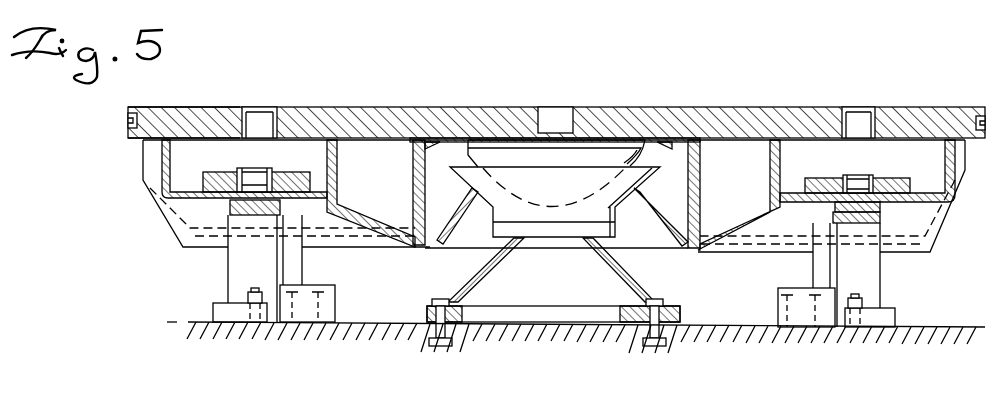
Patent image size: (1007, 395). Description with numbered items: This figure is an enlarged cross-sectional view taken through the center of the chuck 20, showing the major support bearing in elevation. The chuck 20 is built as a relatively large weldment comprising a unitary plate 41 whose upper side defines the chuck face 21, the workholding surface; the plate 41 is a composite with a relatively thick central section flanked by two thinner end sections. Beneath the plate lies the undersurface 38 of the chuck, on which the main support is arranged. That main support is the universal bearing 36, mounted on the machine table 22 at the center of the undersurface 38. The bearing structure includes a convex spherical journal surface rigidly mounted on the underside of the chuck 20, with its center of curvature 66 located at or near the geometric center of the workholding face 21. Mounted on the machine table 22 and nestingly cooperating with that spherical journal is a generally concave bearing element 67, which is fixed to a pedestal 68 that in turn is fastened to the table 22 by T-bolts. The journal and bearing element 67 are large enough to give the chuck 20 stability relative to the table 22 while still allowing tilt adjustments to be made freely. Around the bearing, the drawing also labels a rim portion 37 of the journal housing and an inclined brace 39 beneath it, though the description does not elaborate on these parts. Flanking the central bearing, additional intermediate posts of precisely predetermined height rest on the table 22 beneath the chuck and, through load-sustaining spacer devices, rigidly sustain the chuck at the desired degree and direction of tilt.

The chuck 20 is at (386, 94).
The chuck face 21 is at (750, 107).
The plate 41 is at (216, 107).
The center of curvature 66 is at (556, 120).
The undersurface 38 is at (670, 141).
The bowl rim 37 is at (477, 152).
The universal bearing 36 is at (634, 209).
The concave bearing element 67 is at (524, 198).
The brace 39 is at (482, 195).
The pedestal 68 is at (647, 290).
The table 22 is at (375, 322).